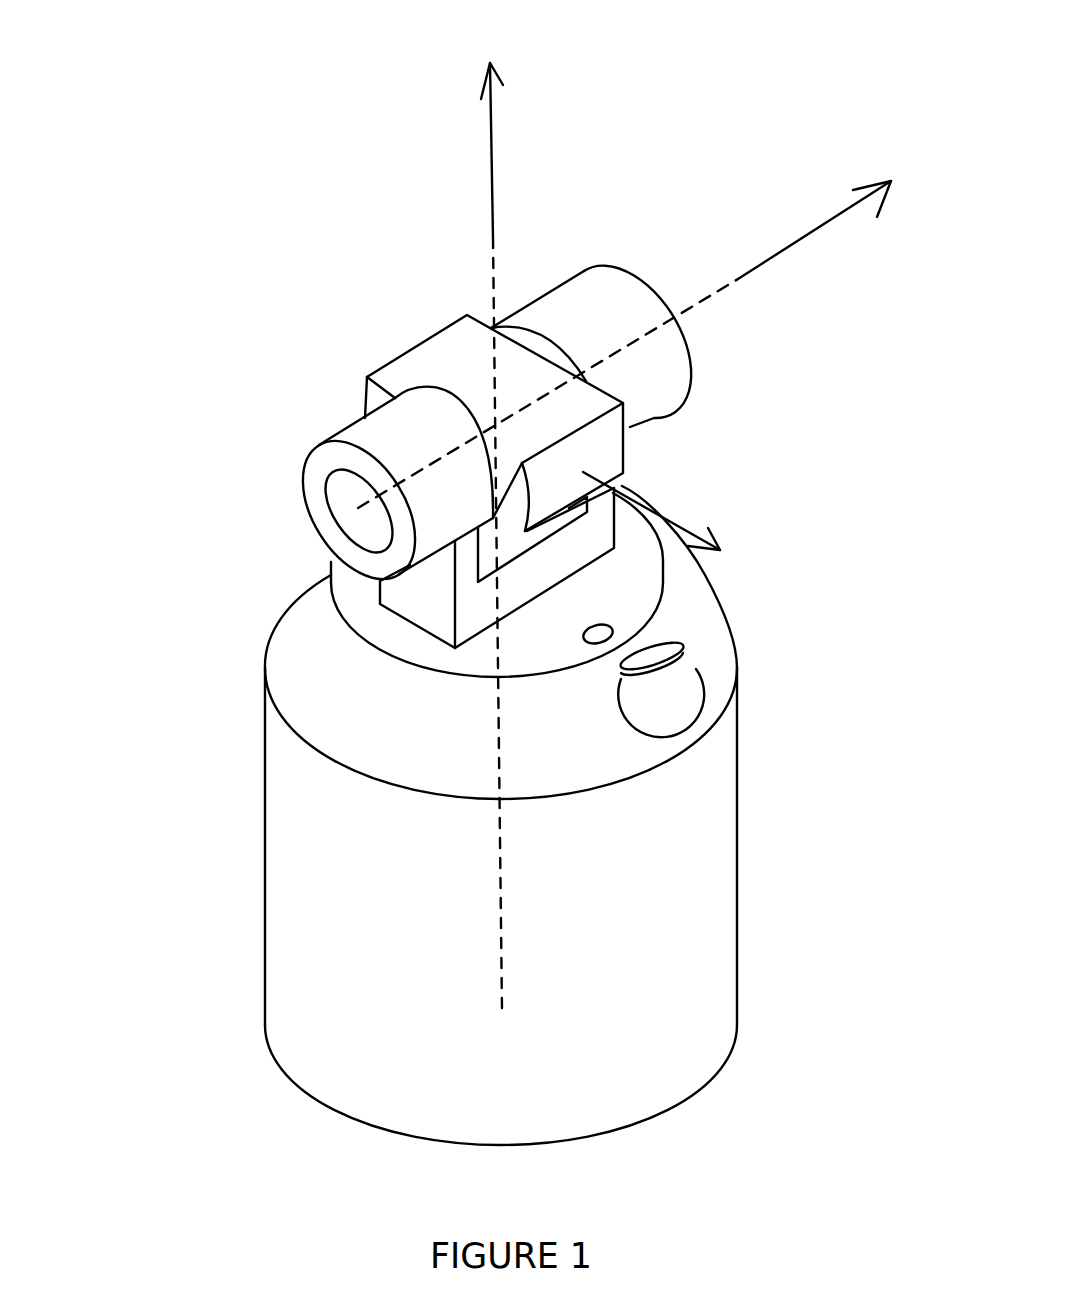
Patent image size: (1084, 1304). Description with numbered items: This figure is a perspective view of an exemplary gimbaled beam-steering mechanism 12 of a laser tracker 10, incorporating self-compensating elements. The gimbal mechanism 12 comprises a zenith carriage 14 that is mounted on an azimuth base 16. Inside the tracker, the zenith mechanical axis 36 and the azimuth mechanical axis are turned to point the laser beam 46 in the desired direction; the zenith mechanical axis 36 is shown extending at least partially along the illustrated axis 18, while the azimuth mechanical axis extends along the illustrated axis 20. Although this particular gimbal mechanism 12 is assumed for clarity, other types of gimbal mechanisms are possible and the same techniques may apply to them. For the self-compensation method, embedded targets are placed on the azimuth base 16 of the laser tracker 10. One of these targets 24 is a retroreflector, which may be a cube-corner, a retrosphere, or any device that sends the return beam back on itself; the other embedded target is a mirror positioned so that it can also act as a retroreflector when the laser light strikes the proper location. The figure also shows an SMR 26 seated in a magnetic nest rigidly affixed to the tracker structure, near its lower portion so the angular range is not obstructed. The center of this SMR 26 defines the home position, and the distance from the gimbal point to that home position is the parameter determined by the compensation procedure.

The laser tracker 10 is at (228, 297).
The gimbaled beam-steering mechanism 12 is at (528, 398).
The zenith carriage 14 is at (303, 541).
The azimuth base 16 is at (266, 688).
The illustrated axis 18 is at (653, 332).
The illustrated axis 20 is at (491, 514).
The embedded target 24 is at (612, 626).
The SMR 26 is at (680, 648).
The zenith mechanical axis 36 is at (343, 497).
The laser beam 46 is at (656, 503).